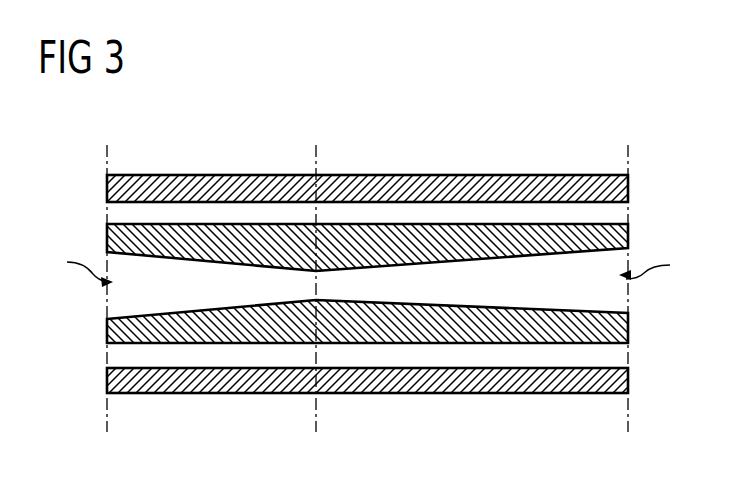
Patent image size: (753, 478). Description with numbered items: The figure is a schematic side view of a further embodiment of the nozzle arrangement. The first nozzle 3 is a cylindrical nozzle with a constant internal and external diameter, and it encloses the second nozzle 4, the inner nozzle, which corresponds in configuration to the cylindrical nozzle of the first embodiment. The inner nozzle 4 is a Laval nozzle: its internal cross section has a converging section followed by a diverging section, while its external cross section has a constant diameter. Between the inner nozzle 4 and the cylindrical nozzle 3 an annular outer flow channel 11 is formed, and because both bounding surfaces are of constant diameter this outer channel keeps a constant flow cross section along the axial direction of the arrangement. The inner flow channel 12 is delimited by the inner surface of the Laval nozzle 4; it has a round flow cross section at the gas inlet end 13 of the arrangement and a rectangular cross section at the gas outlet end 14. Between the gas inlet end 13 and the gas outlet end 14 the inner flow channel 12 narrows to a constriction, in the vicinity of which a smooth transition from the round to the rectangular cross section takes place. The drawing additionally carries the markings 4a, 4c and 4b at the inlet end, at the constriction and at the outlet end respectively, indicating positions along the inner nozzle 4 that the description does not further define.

The first nozzle 3 is at (423, 174).
The second nozzle 4 is at (472, 234).
The first end section 4a is at (110, 290).
The second end section 4b is at (629, 290).
The middle section 4c is at (317, 290).
The annular outer flow channel 11 is at (427, 355).
The inner flow channel 12 is at (510, 295).
The gas inlet end 13 is at (75, 266).
The gas outlet end 14 is at (659, 263).